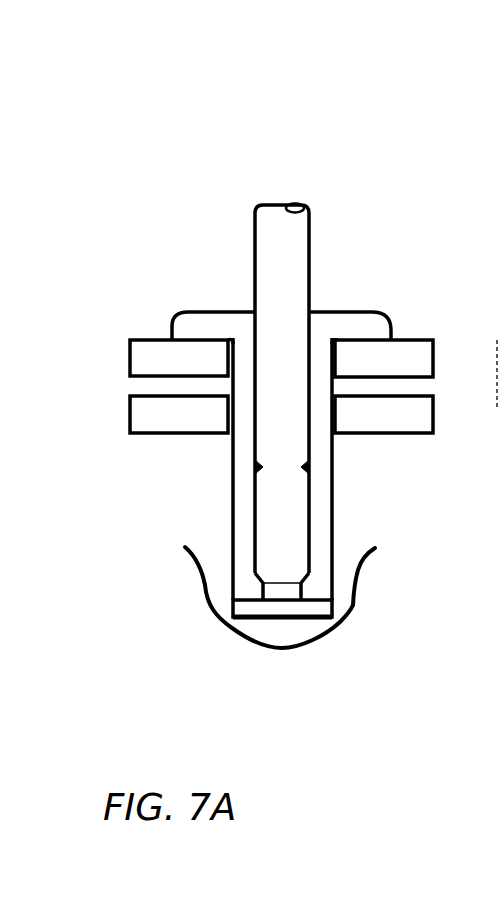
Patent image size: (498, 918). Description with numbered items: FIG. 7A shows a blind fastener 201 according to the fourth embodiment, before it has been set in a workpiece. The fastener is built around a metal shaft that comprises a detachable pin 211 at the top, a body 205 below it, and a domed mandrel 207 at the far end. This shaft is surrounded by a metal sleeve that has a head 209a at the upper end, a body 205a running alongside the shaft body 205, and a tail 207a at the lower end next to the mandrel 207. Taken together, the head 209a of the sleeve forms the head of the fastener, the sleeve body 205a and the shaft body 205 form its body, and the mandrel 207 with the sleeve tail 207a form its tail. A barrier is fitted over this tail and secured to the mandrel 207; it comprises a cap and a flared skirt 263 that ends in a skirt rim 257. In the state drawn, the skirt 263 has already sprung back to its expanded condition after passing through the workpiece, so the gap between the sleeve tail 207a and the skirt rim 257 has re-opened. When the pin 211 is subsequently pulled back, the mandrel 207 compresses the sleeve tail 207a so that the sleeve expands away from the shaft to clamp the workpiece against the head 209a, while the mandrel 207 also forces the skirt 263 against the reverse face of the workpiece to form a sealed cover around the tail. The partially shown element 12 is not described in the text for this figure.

The blind fastener 201 is at (174, 212).
The pin 211 is at (276, 228).
The head 209a is at (192, 322).
The body 205a is at (240, 385).
The body 205 is at (280, 545).
The tail 207a is at (240, 562).
The mandrel 207 is at (268, 633).
The skirt rim 257 is at (378, 548).
The skirt 263 is at (362, 594).
The device body 12 is at (497, 296).